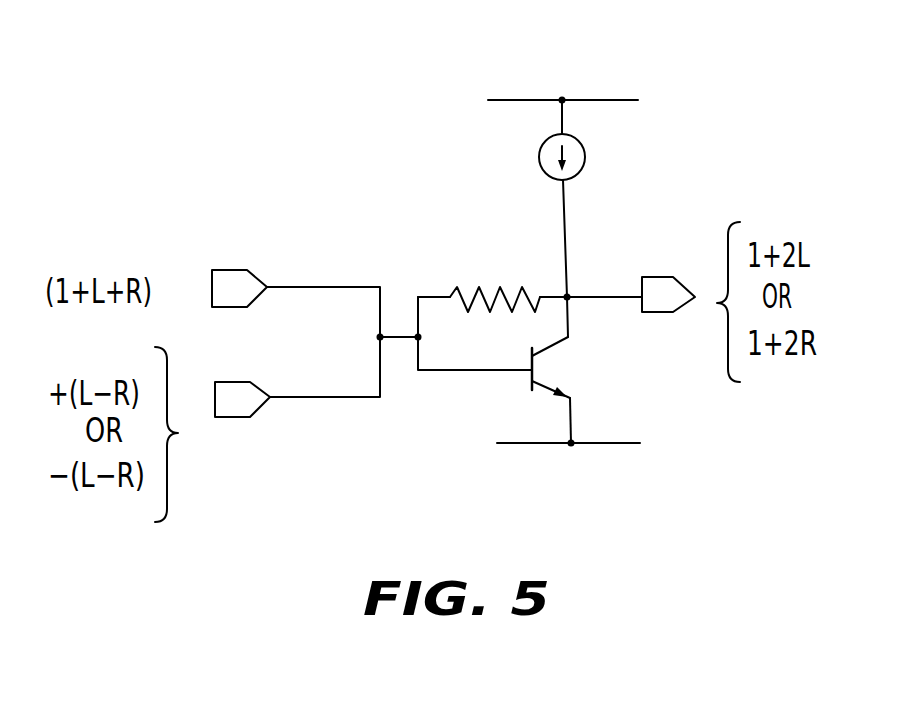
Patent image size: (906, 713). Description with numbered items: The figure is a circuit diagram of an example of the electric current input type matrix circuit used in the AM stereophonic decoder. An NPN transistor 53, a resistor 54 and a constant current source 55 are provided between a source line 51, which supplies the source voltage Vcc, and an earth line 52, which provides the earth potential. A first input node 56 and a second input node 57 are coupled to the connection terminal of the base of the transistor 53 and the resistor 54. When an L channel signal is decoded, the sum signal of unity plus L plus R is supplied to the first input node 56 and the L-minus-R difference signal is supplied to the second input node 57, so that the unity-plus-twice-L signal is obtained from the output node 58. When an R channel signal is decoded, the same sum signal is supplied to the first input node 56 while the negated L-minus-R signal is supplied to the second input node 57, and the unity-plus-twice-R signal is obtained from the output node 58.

The source line 51 is at (527, 100).
The earth line 52 is at (540, 450).
The NPN transistor 53 is at (575, 364).
The resistor 54 is at (487, 287).
The constant current source 55 is at (585, 157).
The first input node 56 is at (225, 285).
The second input node 57 is at (238, 410).
The output node 58 is at (669, 277).